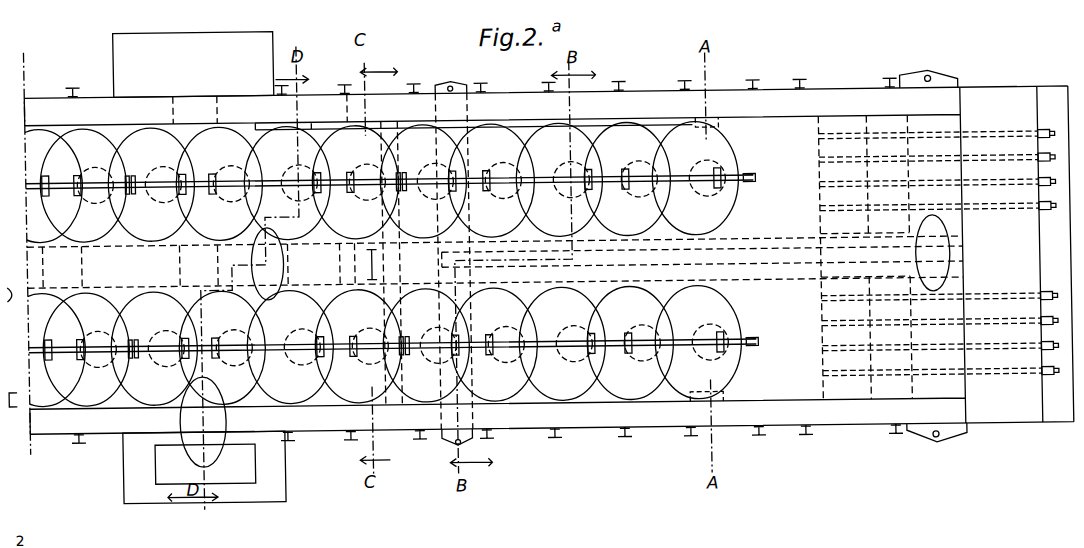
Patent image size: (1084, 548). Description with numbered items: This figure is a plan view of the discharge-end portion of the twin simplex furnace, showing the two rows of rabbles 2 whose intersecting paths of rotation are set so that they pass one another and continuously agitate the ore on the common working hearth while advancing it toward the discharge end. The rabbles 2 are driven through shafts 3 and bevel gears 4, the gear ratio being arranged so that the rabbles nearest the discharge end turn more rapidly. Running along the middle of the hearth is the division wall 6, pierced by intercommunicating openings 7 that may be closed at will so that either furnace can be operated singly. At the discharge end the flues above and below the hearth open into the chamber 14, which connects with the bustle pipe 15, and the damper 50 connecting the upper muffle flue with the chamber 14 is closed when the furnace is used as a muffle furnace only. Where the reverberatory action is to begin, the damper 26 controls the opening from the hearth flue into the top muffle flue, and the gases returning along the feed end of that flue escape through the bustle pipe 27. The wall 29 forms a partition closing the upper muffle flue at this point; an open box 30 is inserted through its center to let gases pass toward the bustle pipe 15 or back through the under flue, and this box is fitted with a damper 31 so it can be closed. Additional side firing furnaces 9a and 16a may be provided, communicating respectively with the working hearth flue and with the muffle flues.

The rabbles 2 is at (371, 264).
The shafts 3 is at (391, 265).
The bevel gears 4 is at (386, 264).
The division wall 6 is at (543, 262).
The intercommunicating arches or openings 7 is at (495, 262).
The side firing furnace 9a is at (204, 439).
The passage or chamber 14 is at (938, 256).
The bustle pipe 15 is at (932, 253).
The side firing furnace 16a is at (193, 65).
The damper 26 is at (464, 263).
The bustle pipe 27 is at (270, 264).
The wall 29 is at (336, 240).
The open box 30 is at (393, 263).
The damper 31 is at (361, 263).
The damper 50 is at (934, 256).